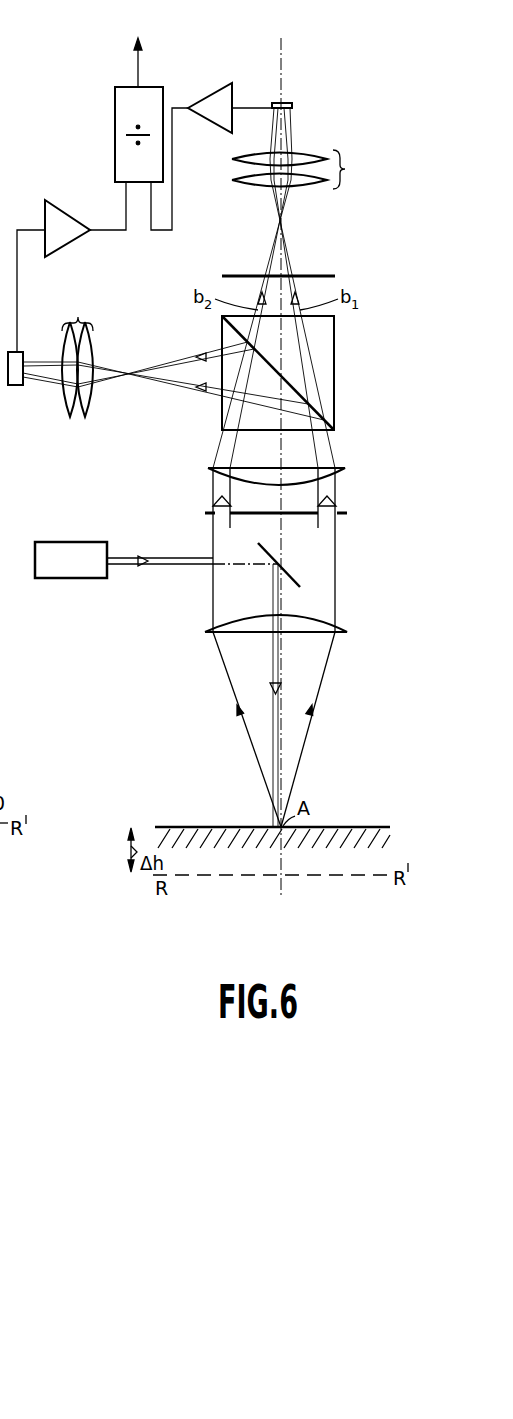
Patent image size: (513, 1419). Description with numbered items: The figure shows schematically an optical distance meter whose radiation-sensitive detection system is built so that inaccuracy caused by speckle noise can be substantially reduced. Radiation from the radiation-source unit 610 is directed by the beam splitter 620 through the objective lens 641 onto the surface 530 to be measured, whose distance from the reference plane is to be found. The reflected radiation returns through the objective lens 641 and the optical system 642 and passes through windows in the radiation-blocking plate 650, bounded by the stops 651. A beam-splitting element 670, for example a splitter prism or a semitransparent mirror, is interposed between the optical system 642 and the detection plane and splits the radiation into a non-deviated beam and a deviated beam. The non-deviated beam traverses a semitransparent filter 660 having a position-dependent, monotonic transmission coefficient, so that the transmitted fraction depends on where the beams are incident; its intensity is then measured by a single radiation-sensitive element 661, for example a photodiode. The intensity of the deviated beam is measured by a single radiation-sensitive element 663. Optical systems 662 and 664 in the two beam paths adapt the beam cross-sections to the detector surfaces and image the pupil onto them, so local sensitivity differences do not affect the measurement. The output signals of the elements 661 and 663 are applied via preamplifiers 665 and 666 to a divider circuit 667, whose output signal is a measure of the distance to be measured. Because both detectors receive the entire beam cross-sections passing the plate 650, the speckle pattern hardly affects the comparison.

The surface of object 530 is at (352, 827).
The radiation-source unit 610 is at (82, 570).
The beam splitter 620 is at (297, 578).
The objective lens 641 is at (320, 627).
The optical system 642 is at (310, 483).
The radiation-blocking plate 650 is at (300, 522).
The light stops 651 is at (330, 511).
The semitransparent filter 660 is at (327, 266).
The radiation-sensitive element 661 is at (293, 104).
The optical system 662 is at (346, 169).
The radiation-sensitive element 663 is at (17, 388).
The optical system 664 is at (77, 348).
The preamplifier 665 is at (216, 102).
The preamplifier 666 is at (70, 212).
The divider circuit 667 is at (115, 101).
The beam-splitting element 670 is at (326, 364).